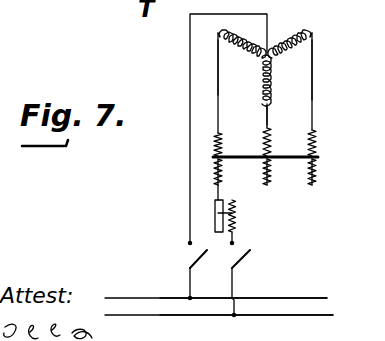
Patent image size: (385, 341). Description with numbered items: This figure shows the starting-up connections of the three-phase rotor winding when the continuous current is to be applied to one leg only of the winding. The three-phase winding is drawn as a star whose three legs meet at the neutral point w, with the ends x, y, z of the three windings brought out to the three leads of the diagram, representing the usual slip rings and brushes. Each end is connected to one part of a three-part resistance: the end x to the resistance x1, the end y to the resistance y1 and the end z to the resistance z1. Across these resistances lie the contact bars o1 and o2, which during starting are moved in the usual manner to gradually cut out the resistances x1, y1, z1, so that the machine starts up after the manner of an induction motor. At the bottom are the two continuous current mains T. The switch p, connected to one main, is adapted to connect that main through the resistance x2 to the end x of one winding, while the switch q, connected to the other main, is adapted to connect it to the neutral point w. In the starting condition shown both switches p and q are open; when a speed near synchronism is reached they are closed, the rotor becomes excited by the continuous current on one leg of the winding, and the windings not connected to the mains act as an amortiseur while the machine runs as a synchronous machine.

The neutral point w is at (268, 27).
The winding end x is at (217, 88).
The winding end y is at (265, 113).
The winding end z is at (313, 102).
The contact bar o1 is at (232, 157).
The contact bar o2 is at (293, 160).
The resistance x1 is at (213, 172).
The resistance y1 is at (262, 172).
The resistance z1 is at (316, 170).
The resistance x2 is at (243, 222).
The switch q is at (186, 258).
The switch p is at (243, 258).
The supply mains T is at (304, 311).